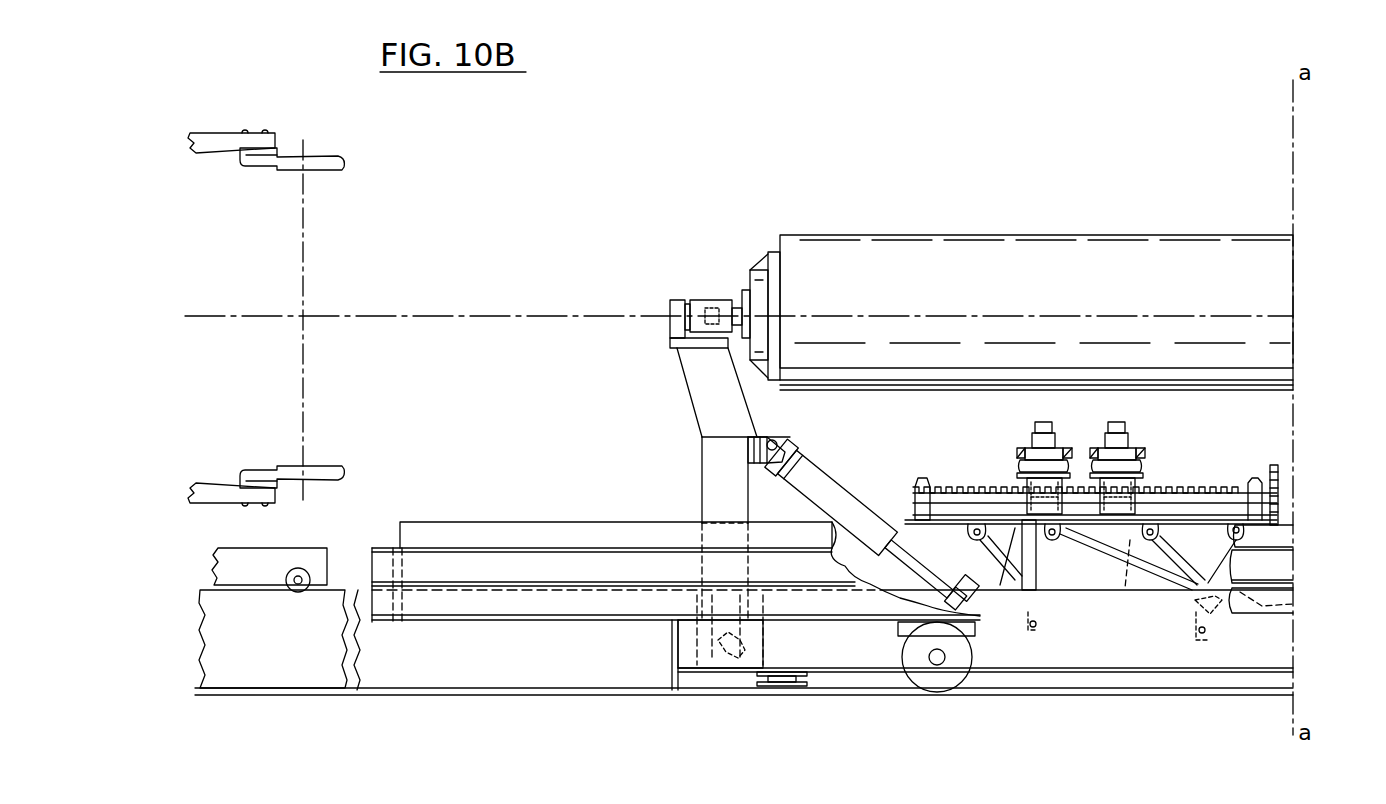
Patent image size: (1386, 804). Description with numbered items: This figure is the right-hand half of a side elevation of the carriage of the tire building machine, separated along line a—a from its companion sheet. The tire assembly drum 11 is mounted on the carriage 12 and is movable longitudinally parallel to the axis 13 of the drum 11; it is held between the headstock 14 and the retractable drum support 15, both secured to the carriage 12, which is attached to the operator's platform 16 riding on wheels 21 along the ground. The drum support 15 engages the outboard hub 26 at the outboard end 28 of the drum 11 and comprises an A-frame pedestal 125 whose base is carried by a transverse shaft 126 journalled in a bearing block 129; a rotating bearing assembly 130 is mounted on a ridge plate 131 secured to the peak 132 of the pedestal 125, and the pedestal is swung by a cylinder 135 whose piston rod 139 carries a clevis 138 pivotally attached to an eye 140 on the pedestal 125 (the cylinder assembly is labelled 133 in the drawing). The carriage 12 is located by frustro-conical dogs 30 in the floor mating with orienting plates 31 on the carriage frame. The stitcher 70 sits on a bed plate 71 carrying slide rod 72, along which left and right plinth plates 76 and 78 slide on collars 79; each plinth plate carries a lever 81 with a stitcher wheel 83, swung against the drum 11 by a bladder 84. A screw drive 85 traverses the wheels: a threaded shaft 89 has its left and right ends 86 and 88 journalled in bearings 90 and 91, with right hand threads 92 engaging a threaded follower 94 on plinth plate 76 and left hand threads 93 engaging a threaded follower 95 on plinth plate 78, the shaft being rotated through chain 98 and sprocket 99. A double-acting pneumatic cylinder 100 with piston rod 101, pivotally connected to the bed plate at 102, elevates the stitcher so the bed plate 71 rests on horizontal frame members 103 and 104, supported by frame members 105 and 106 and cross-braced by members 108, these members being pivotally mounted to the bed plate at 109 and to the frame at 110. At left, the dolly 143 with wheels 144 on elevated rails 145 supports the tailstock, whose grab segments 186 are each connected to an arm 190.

The tire assembly drum 11 is at (1052, 245).
The carriage 12 is at (822, 716).
The axis 13 is at (1176, 312).
The headstock 14 is at (885, 594).
The retractable drum support 15 is at (698, 418).
The operator's platform 16 is at (572, 608).
The wheels 21 is at (945, 680).
The outboard hub 26 is at (745, 268).
The outboard end 28 is at (768, 236).
The frustro-conical dogs 30 is at (780, 686).
The orienting plates 31 is at (815, 668).
The stitcher 70 is at (1215, 432).
The bed plate 71 is at (900, 500).
The slide rod 72 is at (945, 503).
The left plinth plate 76 is at (1010, 470).
The right plinth plate 78 is at (1160, 465).
The fore collar 79 is at (1060, 512).
The lever 81 is at (1080, 447).
The stitcher wheel 83 is at (1043, 425).
The bladder 84 is at (1030, 445).
The screw drive 85 is at (1222, 480).
The left end 86 is at (945, 487).
The right end 88 is at (1258, 482).
The threaded shaft 89 is at (960, 527).
The bearing 90 is at (916, 480).
The bearing 91 is at (1278, 478).
The right hand threads 92 is at (975, 503).
The left hand threads 93 is at (1182, 493).
The threaded follower 94 is at (1038, 540).
The threaded follower 95 is at (1110, 560).
The chain 98 is at (1280, 518).
The sprocket 99 is at (1280, 488).
The double-acting pneumatic cylinder 100 is at (1293, 606).
The piston rod 101 is at (1082, 590).
The pivotal connection 102 is at (1040, 590).
The frame member 103 is at (962, 588).
The frame member 104 is at (1215, 540).
The frame member 105 is at (1030, 600).
The frame member 106 is at (1185, 605).
The cross-brace members 108 is at (1215, 568).
The pivotal mounting 109 is at (996, 560).
The pivotal mounting 110 is at (1038, 628).
The A-frame pedestal 125 is at (708, 472).
The shaft 126 is at (708, 668).
The bearing block 129 is at (745, 652).
The rotating bearing assembly 130 is at (700, 300).
The ridge plate 131 is at (670, 335).
The peak 132 is at (690, 368).
The cylinder 133 is at (818, 442).
The cylinder 135 is at (822, 500).
The clevis 138 is at (760, 430).
The piston rod 139 is at (770, 460).
The eye 140 is at (735, 405).
The dolly 143 is at (300, 565).
The wheels 144 is at (296, 592).
The elevated rails 145 is at (268, 672).
The grab segments 186 is at (325, 166).
The arm 190 is at (222, 135).